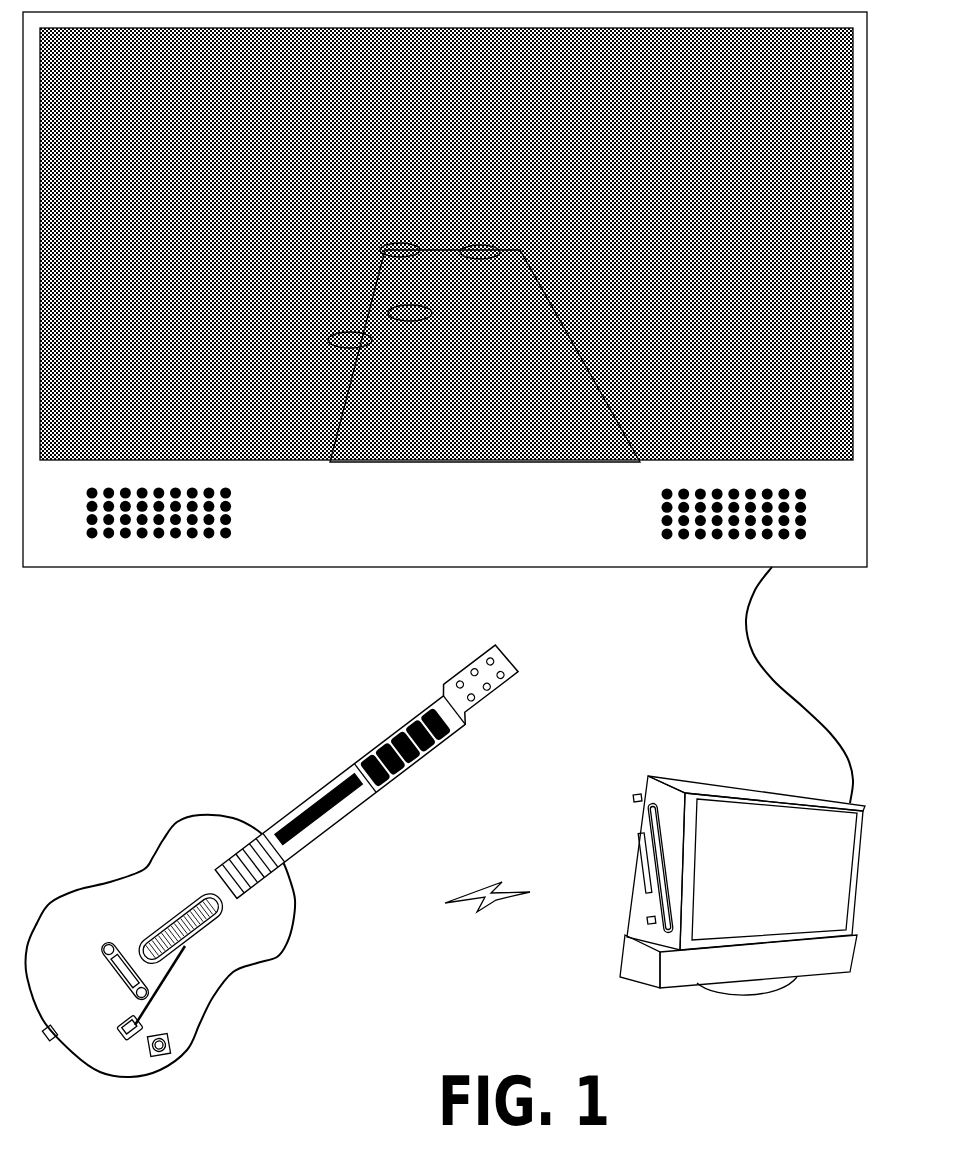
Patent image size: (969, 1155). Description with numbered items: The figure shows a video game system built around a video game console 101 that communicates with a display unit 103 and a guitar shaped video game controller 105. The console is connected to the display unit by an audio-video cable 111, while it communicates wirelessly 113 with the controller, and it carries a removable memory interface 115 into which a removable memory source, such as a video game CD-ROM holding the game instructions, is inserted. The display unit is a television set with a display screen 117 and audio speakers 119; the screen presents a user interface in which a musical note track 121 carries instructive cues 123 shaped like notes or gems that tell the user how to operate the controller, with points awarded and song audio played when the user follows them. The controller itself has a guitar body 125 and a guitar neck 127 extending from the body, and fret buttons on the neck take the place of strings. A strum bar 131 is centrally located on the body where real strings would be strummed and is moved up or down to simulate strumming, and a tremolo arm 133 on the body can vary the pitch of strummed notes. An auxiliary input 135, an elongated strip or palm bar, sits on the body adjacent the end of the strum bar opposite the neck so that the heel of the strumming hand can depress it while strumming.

The video game console 101 is at (742, 907).
The display unit 103 is at (248, 567).
The video game controller 105 is at (274, 880).
The audio-video cable 111 is at (803, 712).
The wireless communication 113 is at (498, 904).
The removable memory interface 115 is at (663, 885).
The display screen 117 is at (380, 460).
The audio speakers 119 is at (227, 518).
The musical note track 121 is at (380, 252).
The instructive cues 123 is at (410, 313).
The guitar body 125 is at (287, 952).
The guitar neck 127 is at (367, 771).
The strum bar 131 is at (172, 920).
The tremolo arm 133 is at (167, 985).
The auxiliary input 135 is at (102, 966).